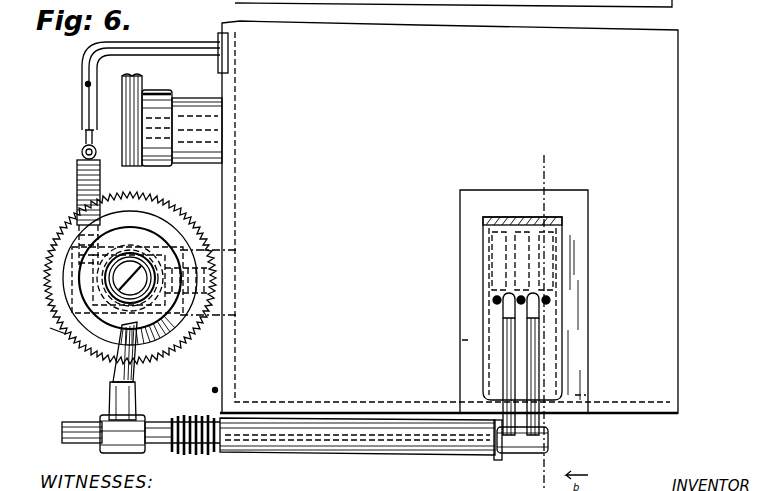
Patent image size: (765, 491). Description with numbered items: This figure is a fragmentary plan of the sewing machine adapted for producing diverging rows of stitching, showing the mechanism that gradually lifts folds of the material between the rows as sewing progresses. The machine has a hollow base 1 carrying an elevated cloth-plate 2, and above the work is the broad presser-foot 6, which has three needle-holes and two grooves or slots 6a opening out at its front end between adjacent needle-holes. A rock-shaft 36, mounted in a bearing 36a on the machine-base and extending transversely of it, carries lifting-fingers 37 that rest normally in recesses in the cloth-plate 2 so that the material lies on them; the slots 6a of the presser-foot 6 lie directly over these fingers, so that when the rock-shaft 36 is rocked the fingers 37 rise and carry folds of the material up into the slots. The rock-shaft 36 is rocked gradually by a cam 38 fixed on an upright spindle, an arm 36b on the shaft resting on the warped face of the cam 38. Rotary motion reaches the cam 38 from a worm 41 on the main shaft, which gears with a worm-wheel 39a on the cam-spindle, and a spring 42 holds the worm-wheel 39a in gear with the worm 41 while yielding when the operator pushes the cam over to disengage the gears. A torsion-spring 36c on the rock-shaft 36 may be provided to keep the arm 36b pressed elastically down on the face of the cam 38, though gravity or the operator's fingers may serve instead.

The base 1 is at (446, 217).
The cloth-plate 2 is at (580, 217).
The presser-foot 6 is at (565, 272).
The grooves or slots 6a is at (500, 330).
The lifting-fingers 37 is at (503, 372).
The rock-shaft 36 is at (62, 430).
The bearing 36a is at (333, 451).
The arm 36b is at (112, 372).
The torsion-spring 36c is at (191, 455).
The cam 38 is at (140, 278).
The worm-wheel 39a is at (38, 333).
The worm 41 is at (143, 86).
The spring 42 is at (77, 181).